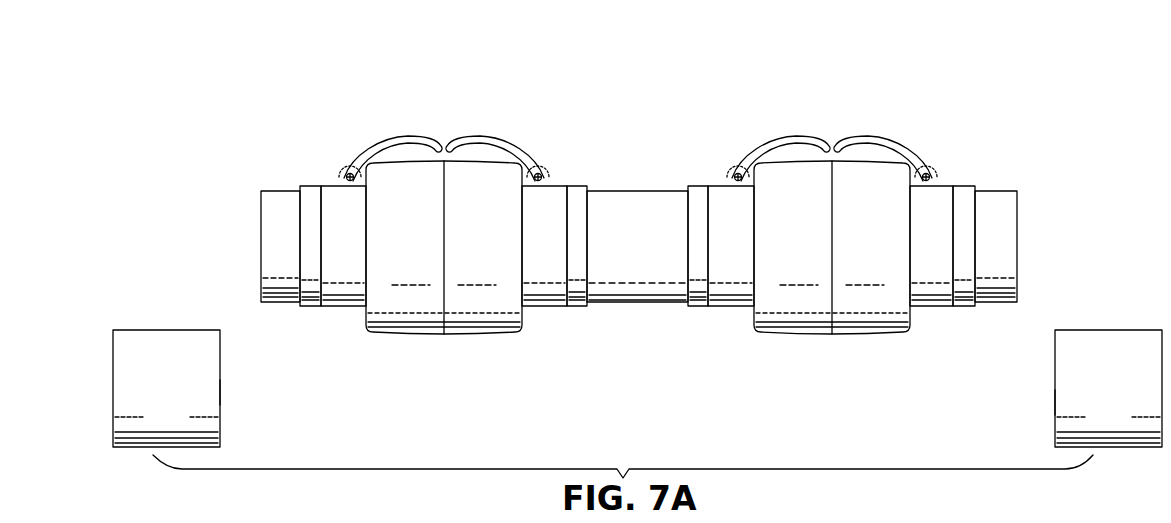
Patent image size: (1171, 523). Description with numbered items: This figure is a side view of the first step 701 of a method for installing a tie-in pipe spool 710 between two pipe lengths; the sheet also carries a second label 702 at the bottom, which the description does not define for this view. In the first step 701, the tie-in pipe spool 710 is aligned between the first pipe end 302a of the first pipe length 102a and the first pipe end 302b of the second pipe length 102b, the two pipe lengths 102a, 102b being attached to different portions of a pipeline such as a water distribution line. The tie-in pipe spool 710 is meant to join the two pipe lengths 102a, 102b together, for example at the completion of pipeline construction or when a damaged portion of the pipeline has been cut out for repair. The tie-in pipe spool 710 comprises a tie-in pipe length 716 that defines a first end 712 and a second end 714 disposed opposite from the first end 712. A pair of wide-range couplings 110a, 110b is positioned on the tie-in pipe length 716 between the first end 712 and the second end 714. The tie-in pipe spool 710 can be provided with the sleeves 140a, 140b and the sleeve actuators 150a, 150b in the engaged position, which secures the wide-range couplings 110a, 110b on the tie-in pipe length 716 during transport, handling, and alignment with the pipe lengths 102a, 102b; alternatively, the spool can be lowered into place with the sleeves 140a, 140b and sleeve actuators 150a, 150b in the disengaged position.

The first step 701 is at (173, 138).
The second assembly 702 is at (180, 520).
The tie-in pipe spool 710 is at (638, 126).
The first end 712 is at (262, 218).
The second end 714 is at (1017, 230).
The tie-in pipe length 716 is at (627, 290).
The first pipe length 102a is at (162, 337).
The second pipe length 102b is at (1092, 332).
The first pipe end 302a is at (220, 393).
The first pipe end 302b is at (1055, 402).
The wide-range coupling 110a is at (421, 160).
The wide-range coupling 110b is at (857, 162).
The sleeve 140a is at (310, 300).
The sleeve 140b is at (580, 304).
The sleeve actuator 150a is at (411, 137).
The sleeve actuator 150b is at (511, 142).